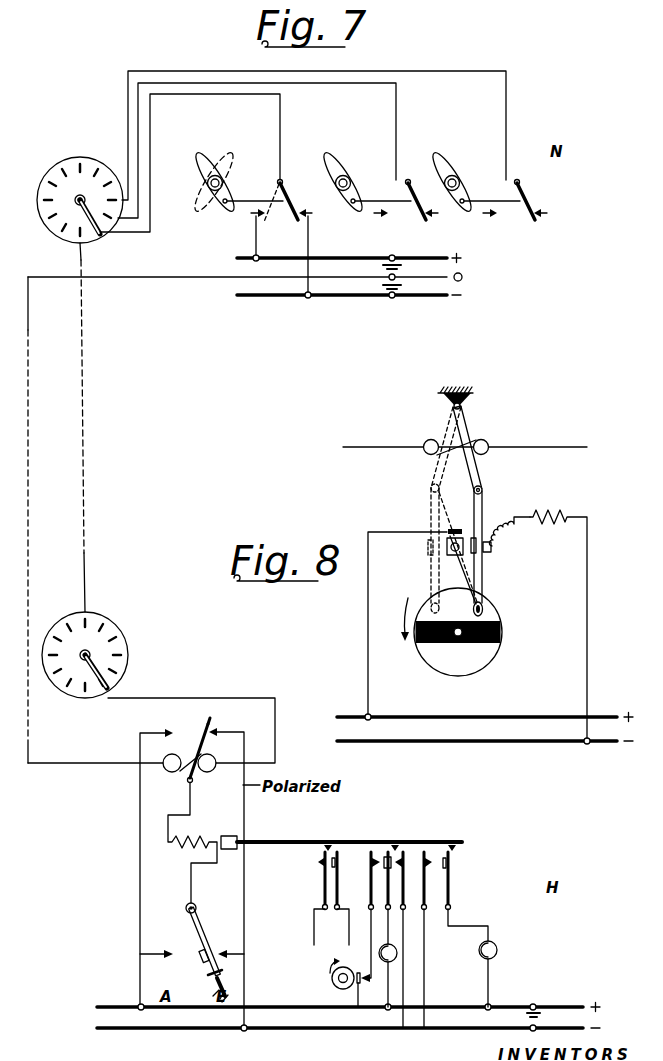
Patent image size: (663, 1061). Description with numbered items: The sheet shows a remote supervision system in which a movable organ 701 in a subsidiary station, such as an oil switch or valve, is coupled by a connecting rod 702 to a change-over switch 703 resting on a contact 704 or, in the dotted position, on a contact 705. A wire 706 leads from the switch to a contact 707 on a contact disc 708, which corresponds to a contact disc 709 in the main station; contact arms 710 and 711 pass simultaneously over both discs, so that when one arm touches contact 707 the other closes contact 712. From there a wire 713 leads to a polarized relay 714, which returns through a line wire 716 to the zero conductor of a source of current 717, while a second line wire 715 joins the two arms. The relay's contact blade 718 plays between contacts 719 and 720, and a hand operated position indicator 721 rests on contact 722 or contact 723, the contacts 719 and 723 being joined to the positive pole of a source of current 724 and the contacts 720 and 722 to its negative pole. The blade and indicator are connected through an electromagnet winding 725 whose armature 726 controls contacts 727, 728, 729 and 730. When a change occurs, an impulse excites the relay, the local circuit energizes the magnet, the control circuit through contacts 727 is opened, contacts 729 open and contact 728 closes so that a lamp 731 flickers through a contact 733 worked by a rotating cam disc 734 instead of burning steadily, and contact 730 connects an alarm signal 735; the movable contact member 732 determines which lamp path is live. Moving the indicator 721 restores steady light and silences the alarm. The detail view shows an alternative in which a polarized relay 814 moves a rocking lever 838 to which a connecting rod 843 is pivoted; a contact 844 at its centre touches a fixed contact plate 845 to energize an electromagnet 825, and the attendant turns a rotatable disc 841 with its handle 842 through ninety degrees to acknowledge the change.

In FIG. 7, the movable organ 701 is at (212, 164).
In FIG. 7, the connecting rod 702 is at (250, 191).
In FIG. 7, the change-over switch 703 is at (288, 191).
In FIG. 7, the contact 704 is at (321, 249).
In FIG. 7, the contact 705 is at (251, 215).
In FIG. 7, the wire 706 is at (213, 95).
In FIG. 7, the contact 707 is at (95, 240).
In FIG. 7, the contact disc 708 is at (78, 158).
In FIG. 7, the contact disc 709 is at (62, 684).
In FIG. 7, the contact arm 710 is at (90, 191).
In FIG. 7, the contact arm 711 is at (98, 653).
In FIG. 7, the contact 712 is at (102, 690).
In FIG. 7, the wire 713 is at (170, 693).
In FIG. 7, the polarized relay 714 is at (199, 768).
In FIG. 7, the line wire 715 is at (85, 433).
In FIG. 7, the line wire 716 is at (29, 431).
In FIG. 7, the source of current 717 is at (400, 291).
In FIG. 7, the contact blade 718 is at (205, 747).
In FIG. 7, the contact 719 is at (173, 723).
In FIG. 7, the contact 720 is at (213, 725).
In FIG. 7, the hand operated position indicator 721 is at (206, 930).
In FIG. 7, the contact 722 is at (230, 950).
In FIG. 7, the contact 723 is at (160, 968).
In FIG. 7, the source of current 724 is at (528, 1016).
In FIG. 7, the electromagnet winding 725 is at (198, 840).
In FIG. 7, the armature 726 is at (238, 838).
In FIG. 7, the contacts 727 is at (322, 887).
In FIG. 7, the contact 728 is at (380, 879).
In FIG. 7, the contacts 729 is at (400, 876).
In FIG. 7, the contact 730 is at (435, 871).
In FIG. 7, the lamp 731 is at (398, 956).
In FIG. 7, the movable contact member 732 is at (388, 852).
In FIG. 7, the contact 733 is at (375, 990).
In FIG. 7, the rotating cam disc 734 is at (331, 981).
In FIG. 7, the alarm signal 735 is at (498, 950).
In FIG. 8, the polarized relay 814 is at (470, 445).
In FIG. 8, the electromagnet 825 is at (566, 507).
In FIG. 8, the rocking lever 838 is at (485, 474).
In FIG. 8, the rotatable disc 841 is at (484, 660).
In FIG. 8, the handle 842 is at (503, 632).
In FIG. 8, the connecting rod 843 is at (482, 579).
In FIG. 8, the contact 844 is at (493, 550).
In FIG. 8, the fixed contact plate 845 is at (463, 561).